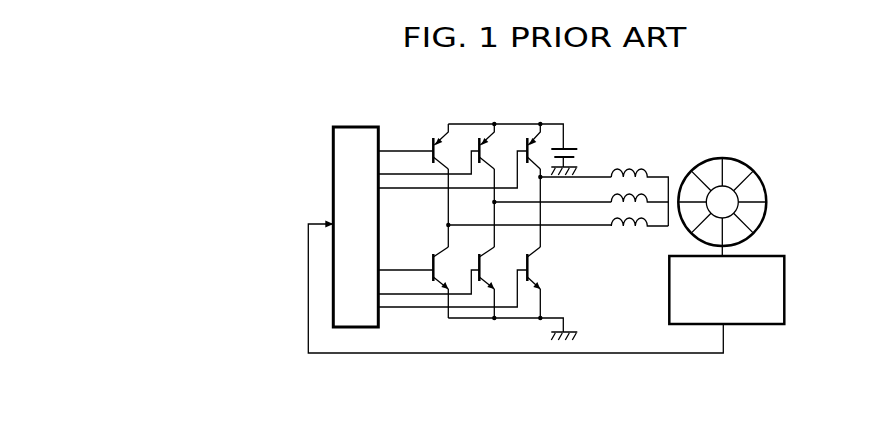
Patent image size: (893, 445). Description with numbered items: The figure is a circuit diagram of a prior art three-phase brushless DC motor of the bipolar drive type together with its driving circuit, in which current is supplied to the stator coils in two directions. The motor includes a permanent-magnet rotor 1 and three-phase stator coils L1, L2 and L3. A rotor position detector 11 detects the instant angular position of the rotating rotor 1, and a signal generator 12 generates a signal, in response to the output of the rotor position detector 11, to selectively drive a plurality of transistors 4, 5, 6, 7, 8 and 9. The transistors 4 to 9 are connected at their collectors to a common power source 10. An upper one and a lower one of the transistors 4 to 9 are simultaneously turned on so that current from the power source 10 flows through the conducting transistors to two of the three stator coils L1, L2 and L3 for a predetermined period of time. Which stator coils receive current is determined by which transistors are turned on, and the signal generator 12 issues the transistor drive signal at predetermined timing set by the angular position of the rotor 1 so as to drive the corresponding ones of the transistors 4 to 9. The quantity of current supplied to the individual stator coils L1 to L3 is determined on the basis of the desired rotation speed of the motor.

The permanent-magnet rotor 1 is at (768, 203).
The transistor 4 is at (440, 142).
The transistor 5 is at (482, 142).
The transistor 6 is at (530, 142).
The transistor 7 is at (452, 268).
The transistor 8 is at (496, 268).
The transistor 9 is at (543, 270).
The common power source 10 is at (571, 149).
The rotor position detector 11 is at (787, 301).
The signal generator 12 is at (334, 165).
The stator coil L1 is at (642, 170).
The stator coil L2 is at (650, 195).
The stator coil L3 is at (636, 236).